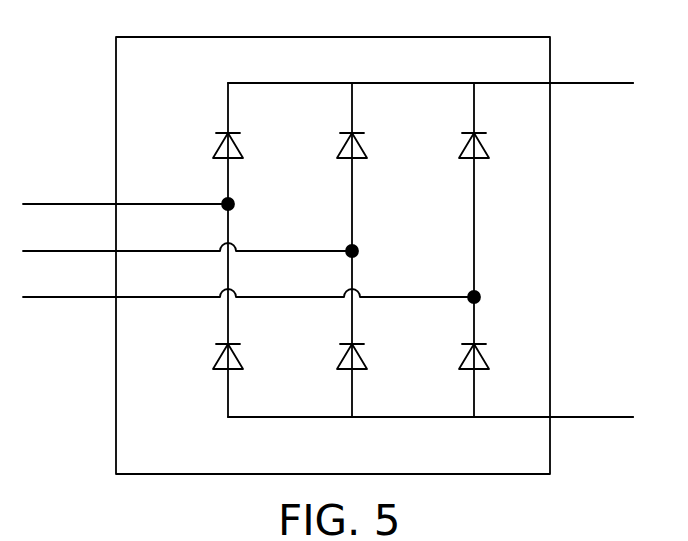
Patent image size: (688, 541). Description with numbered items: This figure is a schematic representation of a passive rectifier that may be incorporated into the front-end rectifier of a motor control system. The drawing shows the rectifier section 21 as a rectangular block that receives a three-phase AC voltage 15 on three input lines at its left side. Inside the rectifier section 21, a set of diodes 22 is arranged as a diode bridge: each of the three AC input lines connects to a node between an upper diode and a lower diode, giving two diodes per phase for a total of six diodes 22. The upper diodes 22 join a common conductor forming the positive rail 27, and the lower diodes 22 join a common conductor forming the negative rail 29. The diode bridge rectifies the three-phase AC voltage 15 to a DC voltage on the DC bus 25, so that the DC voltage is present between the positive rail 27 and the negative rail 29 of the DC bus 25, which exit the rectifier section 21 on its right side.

The three-phase AC voltage 15 is at (57, 198).
The rectifier section 21 is at (197, 37).
The diodes 22 is at (239, 146).
The DC bus 25 is at (581, 89).
The positive rail 27 is at (618, 83).
The negative rail 29 is at (567, 418).